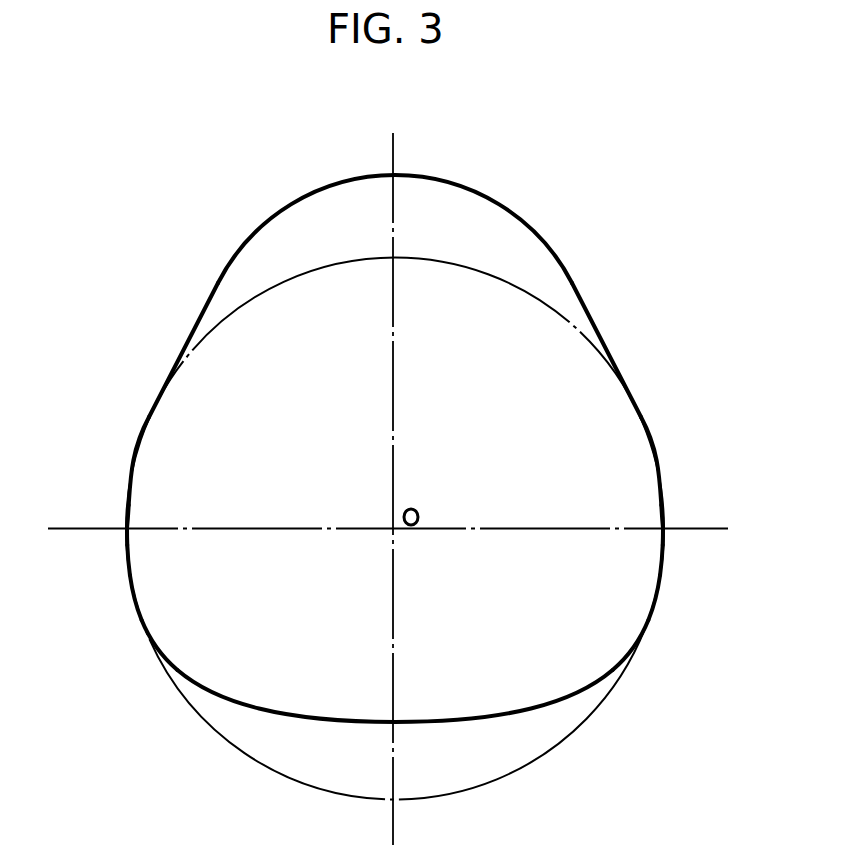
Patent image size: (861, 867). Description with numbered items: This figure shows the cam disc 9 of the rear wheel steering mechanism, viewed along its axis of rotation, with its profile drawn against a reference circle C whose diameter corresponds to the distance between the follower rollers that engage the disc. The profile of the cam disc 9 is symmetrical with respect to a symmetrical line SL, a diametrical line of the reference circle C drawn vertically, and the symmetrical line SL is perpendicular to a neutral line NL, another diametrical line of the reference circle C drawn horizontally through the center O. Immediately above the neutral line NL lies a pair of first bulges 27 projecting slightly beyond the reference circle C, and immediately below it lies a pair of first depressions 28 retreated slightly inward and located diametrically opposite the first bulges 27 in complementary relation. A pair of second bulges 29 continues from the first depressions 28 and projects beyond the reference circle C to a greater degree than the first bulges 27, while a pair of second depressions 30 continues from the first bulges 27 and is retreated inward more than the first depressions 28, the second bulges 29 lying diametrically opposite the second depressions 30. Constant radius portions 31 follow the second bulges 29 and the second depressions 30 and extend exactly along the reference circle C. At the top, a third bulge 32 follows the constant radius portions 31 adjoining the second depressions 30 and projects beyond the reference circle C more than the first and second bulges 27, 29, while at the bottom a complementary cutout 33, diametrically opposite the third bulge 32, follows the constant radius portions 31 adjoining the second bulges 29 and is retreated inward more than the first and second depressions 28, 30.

The cam disc 9 is at (400, 475).
The first bulges 27 is at (123, 520).
The first depressions 28 is at (128, 540).
The second bulges 29 is at (130, 592).
The second depressions 30 is at (135, 467).
The constant radius portions 31 is at (147, 423).
The third bulge 32 is at (572, 283).
The cutout 33 is at (532, 712).
The reference circle C is at (435, 258).
The symmetrical line SL is at (397, 152).
The neutral line NL is at (717, 528).
The center O is at (411, 517).